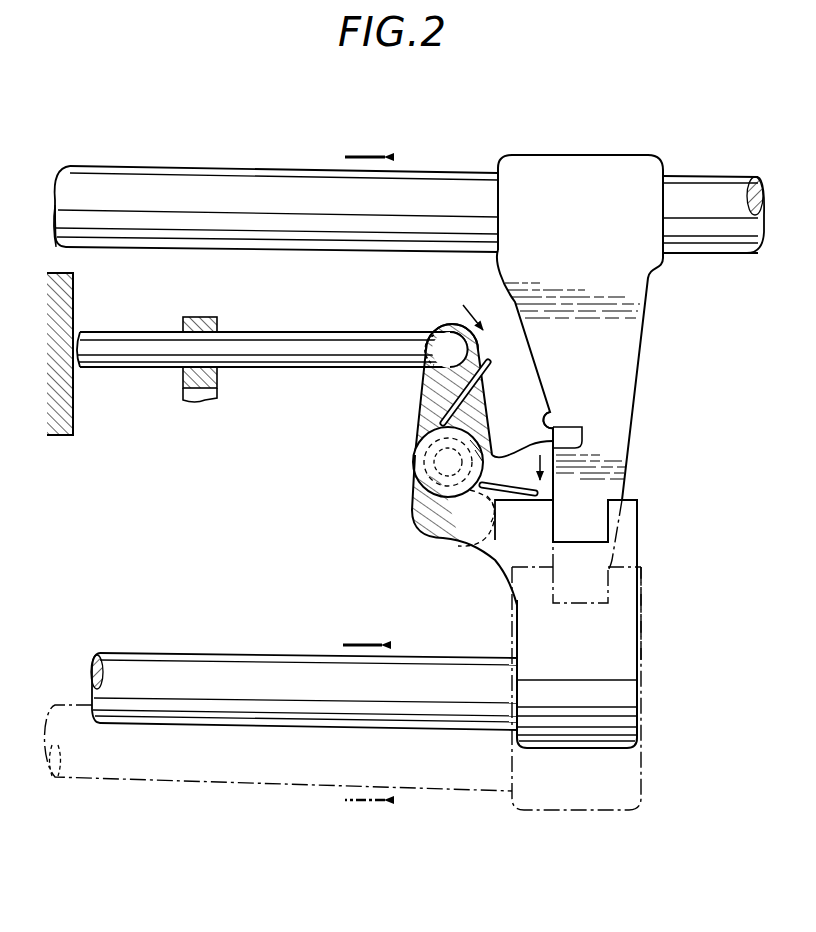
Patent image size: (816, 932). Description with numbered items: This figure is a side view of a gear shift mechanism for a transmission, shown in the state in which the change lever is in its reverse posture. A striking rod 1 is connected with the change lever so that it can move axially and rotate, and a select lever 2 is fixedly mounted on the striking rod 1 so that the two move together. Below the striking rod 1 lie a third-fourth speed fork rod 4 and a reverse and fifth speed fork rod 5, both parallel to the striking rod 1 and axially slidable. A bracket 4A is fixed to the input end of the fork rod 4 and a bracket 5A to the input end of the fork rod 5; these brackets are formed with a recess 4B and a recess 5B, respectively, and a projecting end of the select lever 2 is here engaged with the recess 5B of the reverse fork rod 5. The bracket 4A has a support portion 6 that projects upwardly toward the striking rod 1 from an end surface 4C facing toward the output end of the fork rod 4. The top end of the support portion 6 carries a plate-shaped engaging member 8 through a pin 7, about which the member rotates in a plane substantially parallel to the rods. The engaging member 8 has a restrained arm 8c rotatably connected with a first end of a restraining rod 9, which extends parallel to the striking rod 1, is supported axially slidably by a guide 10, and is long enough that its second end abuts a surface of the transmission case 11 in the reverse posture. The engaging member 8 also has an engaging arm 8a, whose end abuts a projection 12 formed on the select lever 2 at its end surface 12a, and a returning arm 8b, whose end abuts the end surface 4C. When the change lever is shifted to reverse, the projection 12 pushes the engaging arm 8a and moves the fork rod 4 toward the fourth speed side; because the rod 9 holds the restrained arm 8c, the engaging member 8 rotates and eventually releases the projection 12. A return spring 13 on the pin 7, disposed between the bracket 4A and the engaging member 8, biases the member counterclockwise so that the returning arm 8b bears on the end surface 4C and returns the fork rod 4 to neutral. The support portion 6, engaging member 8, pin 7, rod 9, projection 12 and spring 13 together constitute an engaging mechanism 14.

The striking rod 1 is at (452, 180).
The select lever 2 is at (645, 352).
The third-fourth speed fork rod 4 is at (267, 667).
The bracket 4A is at (626, 672).
The recess 4B is at (603, 522).
The end surface 4C is at (500, 520).
The reverse and fifth speed fork rod 5 is at (485, 793).
The bracket 5A is at (645, 580).
The recess 5B is at (600, 605).
The support portion 6 is at (412, 518).
The pin 7 is at (430, 462).
The engaging member 8 is at (420, 413).
The engaging arm 8a is at (528, 450).
The returning arm 8b is at (478, 537).
The restrained arm 8c is at (437, 325).
The restraining rod 9 is at (317, 335).
The guide 10 is at (205, 318).
The transmission case 11 is at (77, 288).
The projection 12 is at (575, 437).
The end surface 12a is at (555, 412).
The return spring 13 is at (477, 392).
The engaging mechanism 14 is at (460, 306).